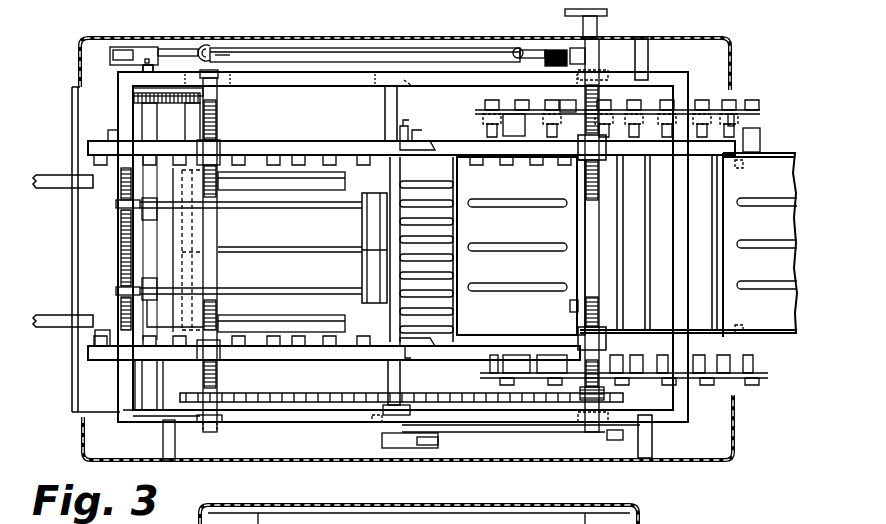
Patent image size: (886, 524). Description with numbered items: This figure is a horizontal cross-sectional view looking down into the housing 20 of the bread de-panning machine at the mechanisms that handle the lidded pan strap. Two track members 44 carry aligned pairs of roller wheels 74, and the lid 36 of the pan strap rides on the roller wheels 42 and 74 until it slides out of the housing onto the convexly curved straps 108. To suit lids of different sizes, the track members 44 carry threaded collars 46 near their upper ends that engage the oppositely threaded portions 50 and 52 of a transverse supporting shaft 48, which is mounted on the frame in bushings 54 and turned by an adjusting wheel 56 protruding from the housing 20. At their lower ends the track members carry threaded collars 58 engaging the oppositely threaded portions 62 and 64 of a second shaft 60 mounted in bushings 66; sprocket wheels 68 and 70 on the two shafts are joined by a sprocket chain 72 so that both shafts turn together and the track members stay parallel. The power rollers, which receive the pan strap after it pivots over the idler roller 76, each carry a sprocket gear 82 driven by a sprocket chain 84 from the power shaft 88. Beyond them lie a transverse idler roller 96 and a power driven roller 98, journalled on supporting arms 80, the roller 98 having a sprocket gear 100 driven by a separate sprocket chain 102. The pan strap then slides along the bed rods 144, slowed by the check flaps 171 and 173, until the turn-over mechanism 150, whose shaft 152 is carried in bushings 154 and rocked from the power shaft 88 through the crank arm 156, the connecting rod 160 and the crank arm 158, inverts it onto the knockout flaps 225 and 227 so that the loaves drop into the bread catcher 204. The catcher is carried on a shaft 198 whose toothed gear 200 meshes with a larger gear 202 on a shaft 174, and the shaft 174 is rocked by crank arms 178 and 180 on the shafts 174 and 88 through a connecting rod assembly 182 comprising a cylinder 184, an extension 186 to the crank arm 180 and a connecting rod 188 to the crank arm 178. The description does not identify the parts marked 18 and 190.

The platen 18 is at (662, 187).
The housing 20 is at (298, 35).
The lid 36 is at (500, 236).
The roller wheels 42 is at (728, 166).
The track members 44 is at (262, 380).
The threaded collars 46 is at (578, 145).
The transverse supporting shaft 48 is at (600, 97).
The threaded portion 50 is at (578, 180).
The threaded portion 52 is at (580, 305).
The bushings 54 is at (612, 70).
The adjusting wheel 56 is at (607, 13).
The threaded collars 58 is at (220, 145).
The shaft 60 is at (218, 113).
The threaded portion 62 is at (218, 190).
The threaded portion 64 is at (218, 305).
The bushings 66 is at (222, 425).
The sprocket wheel 68 is at (615, 395).
The sprocket wheel 70 is at (184, 394).
The sprocket chain 72 is at (286, 362).
The roller wheels 74 is at (360, 155).
The idler roller 76 is at (758, 135).
The supporting arms 80 is at (716, 108).
The sprocket gear 82 is at (733, 118).
The sprocket chain 84 is at (648, 117).
The power shaft 88 is at (580, 95).
The idler roller 96 is at (540, 350).
The power driven roller 98 is at (514, 130).
The sprocket gear 100 is at (520, 365).
The sprocket chain 102 is at (560, 365).
The convexly curved straps 108 is at (60, 251).
The bed rods 144 is at (444, 296).
The turn-over mechanism 150 is at (410, 238).
The transverse horizontal shaft 152 is at (392, 98).
The bushings 154 is at (412, 84).
The crank arm 156 is at (603, 434).
The crank arm 158 is at (420, 448).
The connecting rod 160 is at (455, 438).
The check flap 171 is at (405, 152).
The check flap 173 is at (410, 336).
The shaft 174 is at (150, 390).
The crank arm 178 is at (123, 47).
The crank arm 180 is at (558, 47).
The connecting rod assembly 182 is at (413, 50).
The cylinder 184 is at (334, 57).
The extension 186 is at (522, 50).
The connecting rod 188 is at (190, 35).
The hook 190 is at (206, 44).
The horizontal transverse shaft 198 is at (195, 130).
The toothed gear 200 is at (212, 96).
The gear 202 is at (133, 100).
The bread catcher 204 is at (183, 268).
The knockout flap 225 is at (302, 178).
The knockout flap 227 is at (337, 316).